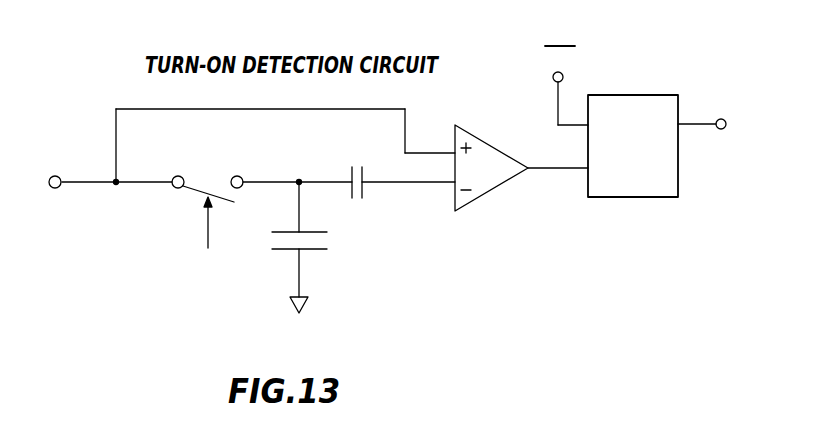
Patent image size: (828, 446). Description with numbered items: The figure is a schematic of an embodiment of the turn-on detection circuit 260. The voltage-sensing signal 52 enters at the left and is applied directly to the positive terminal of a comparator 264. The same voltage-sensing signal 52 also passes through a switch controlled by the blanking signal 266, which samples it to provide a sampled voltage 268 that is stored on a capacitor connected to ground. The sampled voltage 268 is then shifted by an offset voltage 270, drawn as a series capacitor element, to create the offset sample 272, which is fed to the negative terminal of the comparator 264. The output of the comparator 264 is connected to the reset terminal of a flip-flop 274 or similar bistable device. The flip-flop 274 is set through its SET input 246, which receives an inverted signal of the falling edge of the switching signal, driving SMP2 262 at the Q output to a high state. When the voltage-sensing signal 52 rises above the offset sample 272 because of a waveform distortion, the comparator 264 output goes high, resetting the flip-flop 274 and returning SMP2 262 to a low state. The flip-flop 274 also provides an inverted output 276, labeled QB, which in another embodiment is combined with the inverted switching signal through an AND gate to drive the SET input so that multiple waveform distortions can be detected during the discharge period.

The turn-on detection circuit 260 is at (85, 77).
The voltage-sensing signal 52 is at (84, 184).
The blanking signal 266 is at (207, 230).
The sampled voltage 268 is at (279, 180).
The offset voltage 270 is at (370, 228).
The offset sample 272 is at (437, 212).
The comparator 264 is at (521, 168).
The SET input 246 is at (556, 95).
The flip-flop 274 is at (633, 146).
The SMP2 262 is at (698, 121).
The inverted output 276 is at (678, 168).